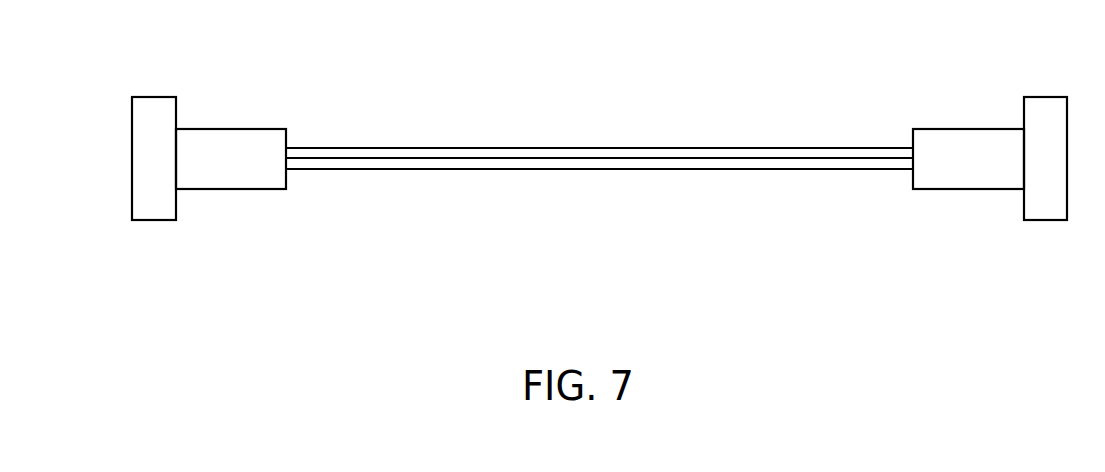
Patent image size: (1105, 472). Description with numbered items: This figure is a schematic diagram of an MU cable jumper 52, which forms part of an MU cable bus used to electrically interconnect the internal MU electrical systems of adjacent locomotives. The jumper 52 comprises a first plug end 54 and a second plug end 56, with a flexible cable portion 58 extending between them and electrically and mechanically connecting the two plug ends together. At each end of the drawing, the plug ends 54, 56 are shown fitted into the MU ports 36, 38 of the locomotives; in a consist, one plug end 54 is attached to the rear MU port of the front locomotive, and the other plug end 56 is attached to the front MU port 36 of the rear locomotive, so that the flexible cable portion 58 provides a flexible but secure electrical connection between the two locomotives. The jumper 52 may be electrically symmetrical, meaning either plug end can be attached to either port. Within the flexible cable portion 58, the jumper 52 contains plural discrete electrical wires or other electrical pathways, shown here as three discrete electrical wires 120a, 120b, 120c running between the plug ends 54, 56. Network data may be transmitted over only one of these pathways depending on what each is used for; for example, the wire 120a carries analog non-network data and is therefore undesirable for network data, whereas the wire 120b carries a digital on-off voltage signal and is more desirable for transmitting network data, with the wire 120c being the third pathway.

The MU cable jumper 52 is at (733, 105).
The MU port 38 is at (154, 97).
The front MU port 36 is at (1046, 97).
The first plug end 54 is at (230, 129).
The second plug end 56 is at (969, 129).
The flexible cable portion 58 is at (511, 212).
The electrical wire 120a is at (435, 147).
The electrical wire 120b is at (602, 158).
The electrical wire 120c is at (672, 170).